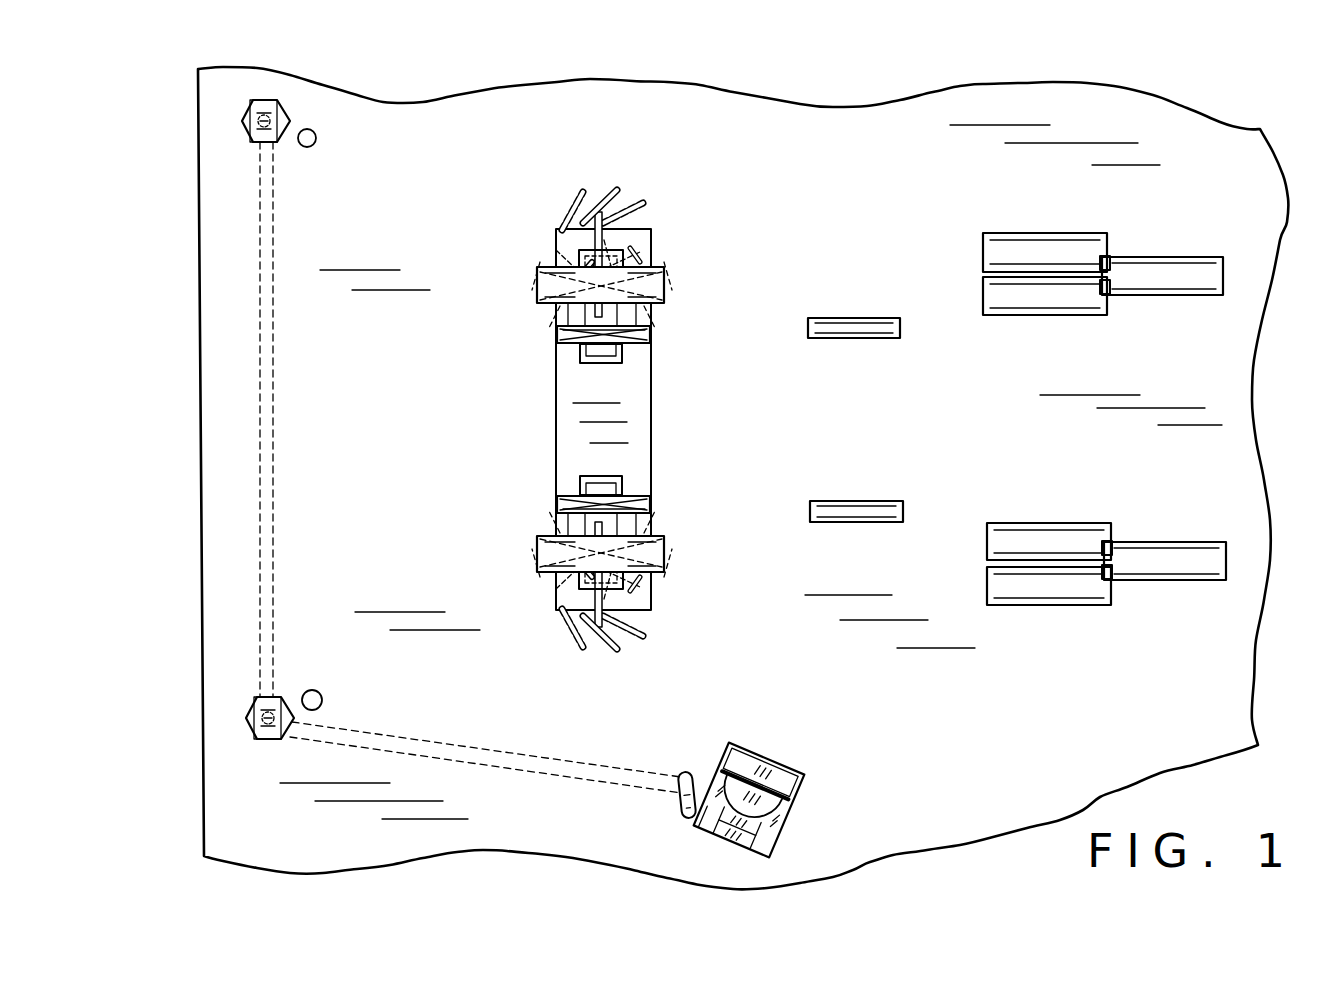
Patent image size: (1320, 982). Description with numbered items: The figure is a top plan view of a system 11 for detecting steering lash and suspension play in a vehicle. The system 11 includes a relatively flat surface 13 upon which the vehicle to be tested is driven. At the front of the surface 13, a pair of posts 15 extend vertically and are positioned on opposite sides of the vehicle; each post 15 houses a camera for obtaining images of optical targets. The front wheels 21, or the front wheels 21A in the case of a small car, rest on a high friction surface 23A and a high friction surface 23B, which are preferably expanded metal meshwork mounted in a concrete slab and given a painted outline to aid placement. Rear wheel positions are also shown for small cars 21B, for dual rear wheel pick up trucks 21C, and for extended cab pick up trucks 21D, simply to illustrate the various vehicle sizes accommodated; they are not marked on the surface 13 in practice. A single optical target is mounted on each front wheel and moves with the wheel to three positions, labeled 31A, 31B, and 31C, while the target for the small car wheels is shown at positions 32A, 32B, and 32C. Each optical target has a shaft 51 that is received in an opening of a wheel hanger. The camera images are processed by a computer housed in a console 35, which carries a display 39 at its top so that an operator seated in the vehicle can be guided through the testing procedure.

The system 11 is at (184, 720).
The flat surface 13 is at (858, 204).
The posts 15 is at (247, 128).
The front wheels 21 is at (662, 290).
The front wheels of small car 21A is at (652, 333).
The rear wheel locations for small cars 21B is at (840, 327).
The rear wheel locations for dual rear wheel pick up trucks 21C is at (1017, 247).
The rear wheel locations for extended cab pick up trucks 21D is at (1155, 273).
The high friction surface 23A is at (607, 350).
The high friction surface 23B is at (612, 478).
The optical target position 31A is at (572, 206).
The optical target position 31B is at (600, 196).
The optical target position 31C is at (636, 200).
The optical target for small car wheels 32A is at (542, 258).
The optical target for small car wheels 32B is at (585, 262).
The optical target for small car wheels 32C is at (632, 262).
The console 35 is at (792, 802).
The display 39 is at (722, 748).
The shaft 51 is at (628, 238).